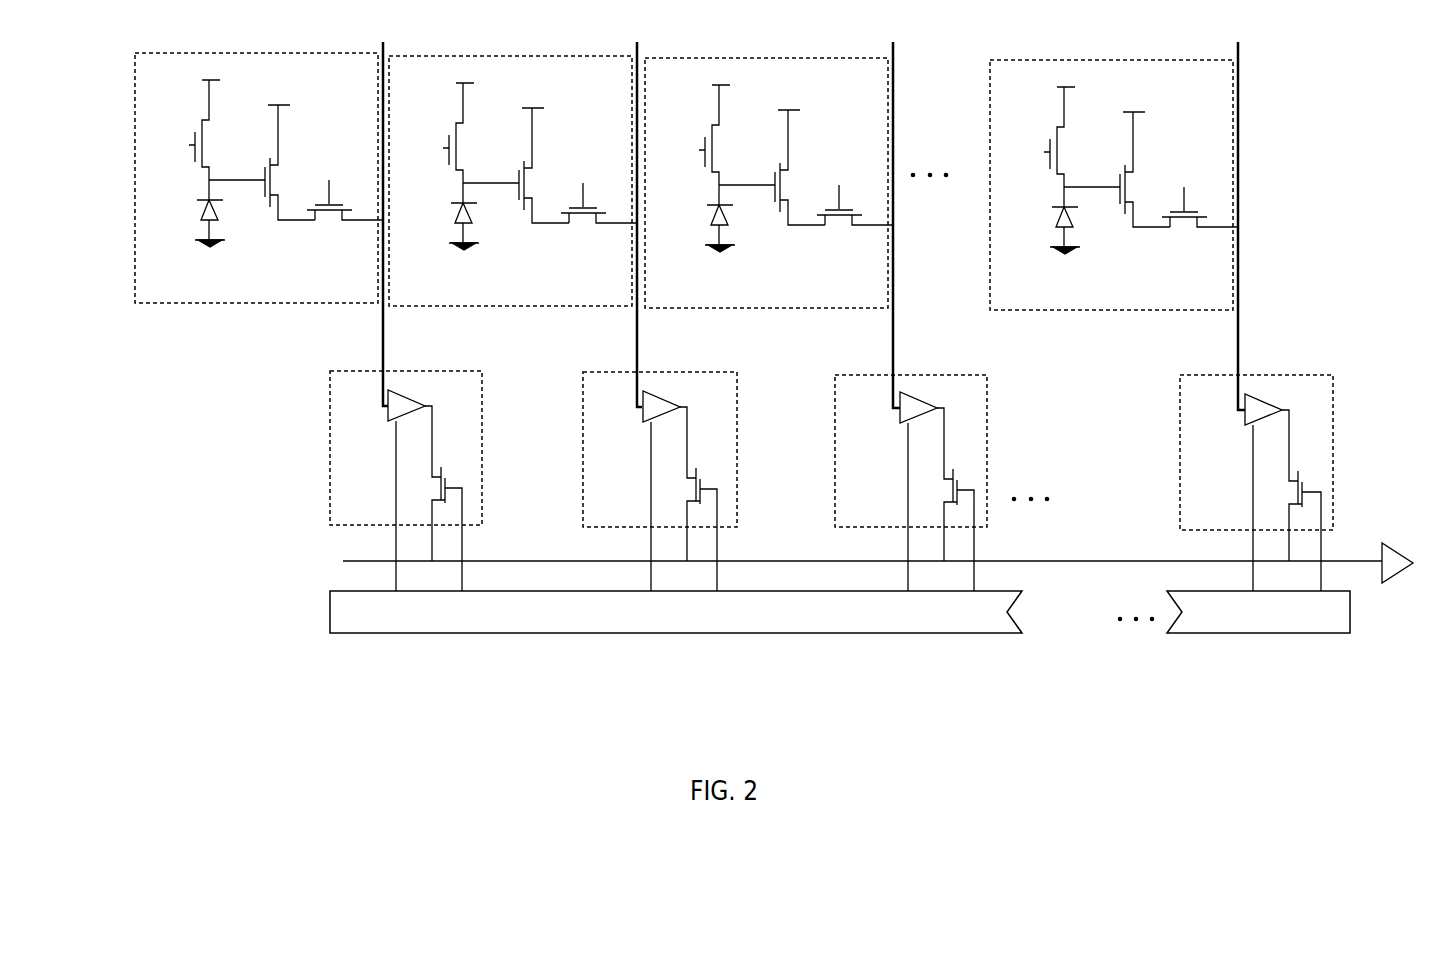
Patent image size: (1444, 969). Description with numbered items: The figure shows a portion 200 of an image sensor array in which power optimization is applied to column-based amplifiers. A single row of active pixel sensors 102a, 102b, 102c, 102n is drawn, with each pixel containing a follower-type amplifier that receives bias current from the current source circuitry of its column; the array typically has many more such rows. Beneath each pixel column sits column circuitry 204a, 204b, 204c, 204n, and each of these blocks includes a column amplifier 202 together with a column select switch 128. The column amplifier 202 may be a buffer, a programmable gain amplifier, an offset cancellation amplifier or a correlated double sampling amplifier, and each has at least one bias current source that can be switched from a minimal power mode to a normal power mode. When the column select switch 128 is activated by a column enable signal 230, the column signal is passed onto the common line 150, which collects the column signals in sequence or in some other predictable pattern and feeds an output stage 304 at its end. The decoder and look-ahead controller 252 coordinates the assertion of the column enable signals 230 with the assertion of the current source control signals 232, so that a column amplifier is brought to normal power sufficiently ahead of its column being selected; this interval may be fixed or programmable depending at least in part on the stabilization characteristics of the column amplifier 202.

The portion of an image sensor array 200 is at (248, 388).
The active pixel sensor 102a is at (261, 213).
The active pixel sensor 102b is at (515, 215).
The active pixel sensor 102c is at (772, 216).
The active pixel sensor 102n is at (1117, 218).
The column circuitry 204a is at (407, 471).
The column circuitry 204b is at (660, 471).
The column circuitry 204c is at (911, 473).
The column circuitry 204n is at (1256, 473).
The column amplifier 202 is at (388, 413).
The column select switch 128 is at (446, 468).
The column enable signal 230 is at (462, 513).
The current source control signal 232 is at (396, 549).
The common line 150 is at (1113, 563).
The decoder and look-ahead controller 252 is at (840, 612).
The output amplifier 304 is at (1393, 580).